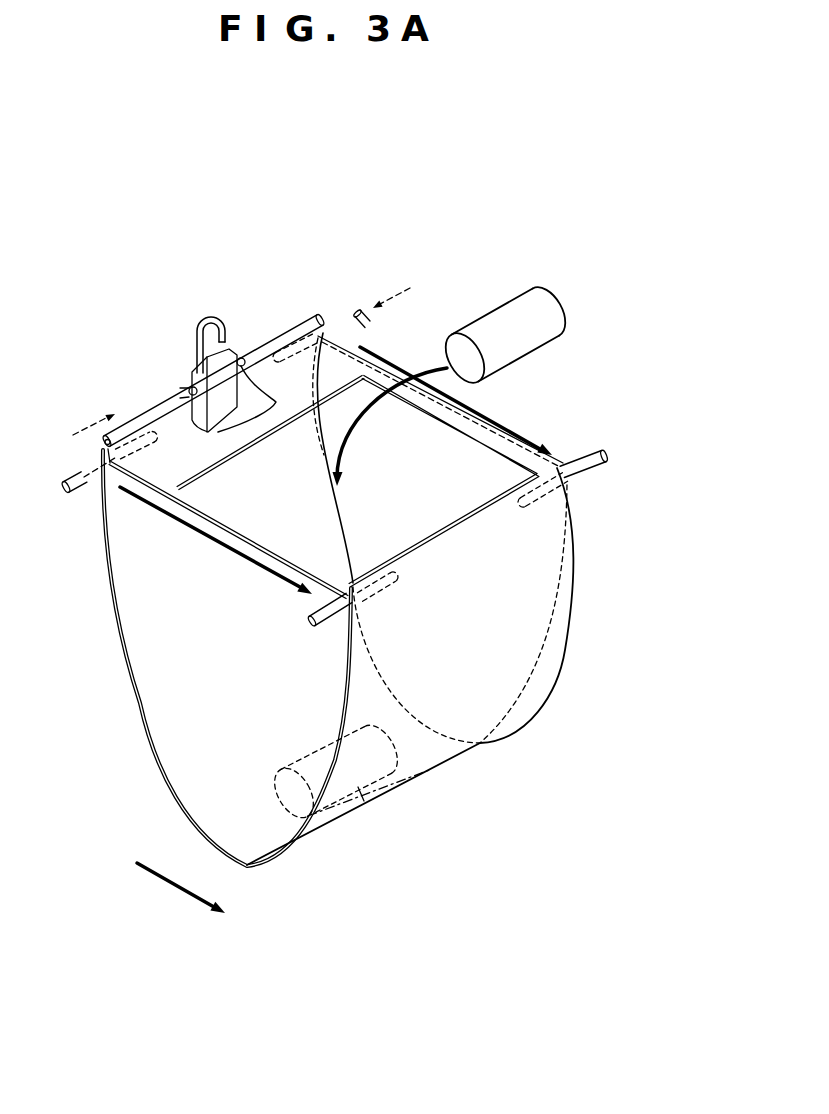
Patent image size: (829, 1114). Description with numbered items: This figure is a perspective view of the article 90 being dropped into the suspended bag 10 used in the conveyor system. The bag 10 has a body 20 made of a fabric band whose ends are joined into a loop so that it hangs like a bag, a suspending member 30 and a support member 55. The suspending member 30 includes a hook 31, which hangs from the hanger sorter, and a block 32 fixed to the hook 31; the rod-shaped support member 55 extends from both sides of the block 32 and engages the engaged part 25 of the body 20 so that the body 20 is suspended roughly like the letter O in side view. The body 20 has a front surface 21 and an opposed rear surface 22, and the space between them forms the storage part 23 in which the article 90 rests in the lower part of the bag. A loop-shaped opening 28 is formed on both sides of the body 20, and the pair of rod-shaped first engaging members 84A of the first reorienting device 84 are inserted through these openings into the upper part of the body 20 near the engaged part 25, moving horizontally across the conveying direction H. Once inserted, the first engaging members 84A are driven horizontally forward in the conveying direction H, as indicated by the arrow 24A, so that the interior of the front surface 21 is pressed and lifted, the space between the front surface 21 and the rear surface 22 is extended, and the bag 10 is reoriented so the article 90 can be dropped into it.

The bag 10 is at (150, 210).
The body 20 is at (146, 763).
The front surface 21 is at (167, 480).
The rear surface 22 is at (153, 620).
The storage part 23 is at (256, 829).
The insertion direction 24A is at (270, 537).
The engaged part 25 is at (289, 318).
The loop-shaped opening 28 is at (475, 625).
The suspending member 30 is at (186, 353).
The hook 31 is at (207, 312).
The block 32 is at (187, 387).
The support member 55 is at (243, 358).
The first reorienting device 84 is at (376, 488).
The first engaging members 84A is at (343, 323).
The article 90 is at (507, 317).
The conveying direction H is at (165, 883).